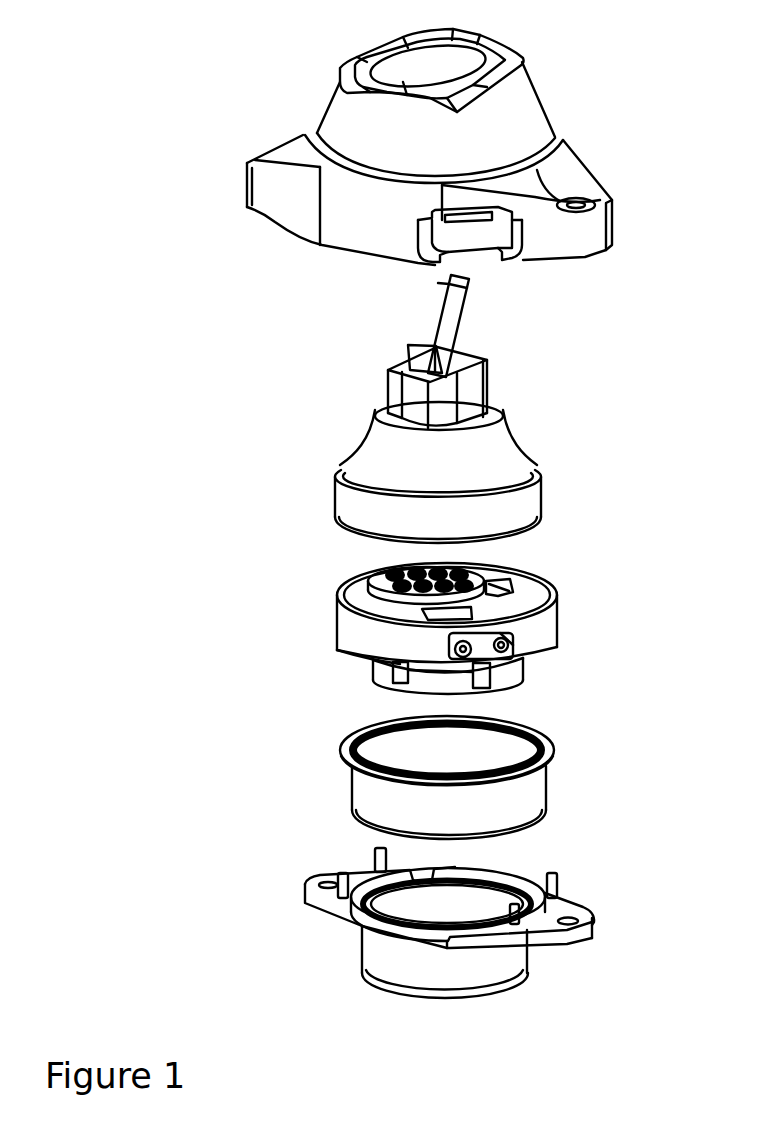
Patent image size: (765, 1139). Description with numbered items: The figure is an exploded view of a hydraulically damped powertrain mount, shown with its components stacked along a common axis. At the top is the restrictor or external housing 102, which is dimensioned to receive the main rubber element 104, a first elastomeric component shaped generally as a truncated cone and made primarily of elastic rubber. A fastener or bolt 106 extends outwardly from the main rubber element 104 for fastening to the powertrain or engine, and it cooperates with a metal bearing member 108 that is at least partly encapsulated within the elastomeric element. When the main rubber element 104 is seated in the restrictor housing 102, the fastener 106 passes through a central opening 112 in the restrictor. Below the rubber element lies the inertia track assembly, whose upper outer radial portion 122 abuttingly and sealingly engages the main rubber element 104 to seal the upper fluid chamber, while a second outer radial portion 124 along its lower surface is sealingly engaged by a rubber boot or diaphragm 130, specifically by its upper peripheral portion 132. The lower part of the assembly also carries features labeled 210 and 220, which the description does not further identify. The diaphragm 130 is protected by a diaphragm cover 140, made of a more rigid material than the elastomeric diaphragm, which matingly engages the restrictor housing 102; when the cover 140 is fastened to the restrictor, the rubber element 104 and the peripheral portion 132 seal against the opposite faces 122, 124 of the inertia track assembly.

The restrictor or external housing 102 is at (603, 137).
The central opening 112 is at (495, 36).
The fastener or bolt 106 is at (456, 311).
The metal bearing member 108 is at (430, 360).
The main rubber element 104 is at (553, 392).
The outer radial portion of the upper surface of the inertia track assembly 122 is at (537, 590).
The second outer radial portion along the lower surface of the inertia track assembl 124 is at (338, 651).
The connector 220 is at (515, 650).
The collar 210 is at (478, 660).
The rubber boot or diaphragm 130 is at (358, 783).
The upper peripheral portion of the diaphragm 132 is at (540, 735).
The diaphragm cover 140 is at (528, 951).